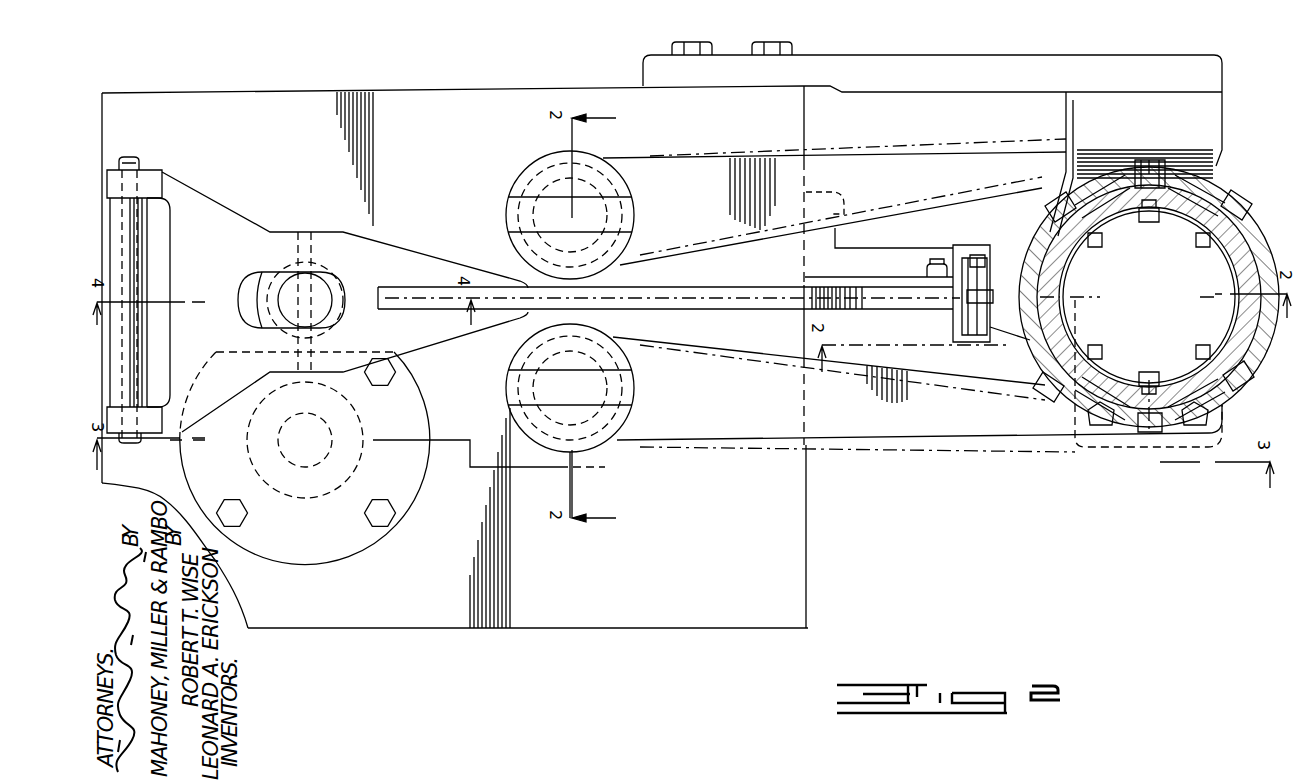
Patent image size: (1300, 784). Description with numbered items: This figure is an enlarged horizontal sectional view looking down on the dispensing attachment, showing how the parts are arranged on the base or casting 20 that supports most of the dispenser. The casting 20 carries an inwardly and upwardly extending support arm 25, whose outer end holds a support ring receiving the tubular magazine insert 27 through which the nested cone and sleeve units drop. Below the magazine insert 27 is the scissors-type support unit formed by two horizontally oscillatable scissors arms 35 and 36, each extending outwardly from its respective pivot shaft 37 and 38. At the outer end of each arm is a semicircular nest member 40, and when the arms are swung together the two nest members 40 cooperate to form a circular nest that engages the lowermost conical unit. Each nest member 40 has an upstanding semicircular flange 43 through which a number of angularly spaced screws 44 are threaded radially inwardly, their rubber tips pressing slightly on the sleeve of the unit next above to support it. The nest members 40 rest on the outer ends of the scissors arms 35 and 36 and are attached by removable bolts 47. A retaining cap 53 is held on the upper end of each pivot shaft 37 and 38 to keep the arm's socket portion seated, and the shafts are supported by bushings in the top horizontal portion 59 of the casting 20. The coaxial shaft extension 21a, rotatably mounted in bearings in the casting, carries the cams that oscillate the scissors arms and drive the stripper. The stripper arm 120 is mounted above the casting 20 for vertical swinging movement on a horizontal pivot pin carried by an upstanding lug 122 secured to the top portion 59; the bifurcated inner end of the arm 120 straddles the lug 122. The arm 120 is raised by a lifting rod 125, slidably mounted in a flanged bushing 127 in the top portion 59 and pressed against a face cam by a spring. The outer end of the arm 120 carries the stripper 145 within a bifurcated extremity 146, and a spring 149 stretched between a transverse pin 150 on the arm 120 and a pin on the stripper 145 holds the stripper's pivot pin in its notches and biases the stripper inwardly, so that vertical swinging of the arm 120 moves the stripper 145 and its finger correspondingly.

The base or casting 20 is at (811, 560).
The shaft extension 21a is at (308, 466).
The support arm 25 is at (884, 41).
The magazine insert 27 is at (1262, 244).
The scissors arm 35 is at (935, 160).
The scissors arm 36 is at (1007, 430).
The scissors arm pivot shaft 37 is at (555, 180).
The scissors arm pivot shaft 38 is at (590, 421).
The semicircular nest member 40 is at (1212, 200).
The upstanding semicircular flange 43 is at (1228, 264).
The screws 44 is at (1255, 206).
The removable bolts 47 is at (1105, 425).
The retaining cap 53 is at (524, 182).
The top horizontal portion of the casting 59 is at (455, 357).
The stripper arm 120 is at (212, 212).
The upstanding lug or support 122 is at (157, 198).
The push rod or lifting rod 125 is at (318, 290).
The flanged bushing 127 is at (252, 286).
The stripper 145 is at (1021, 336).
The bifurcated extremity 146 is at (953, 316).
The spring 149 is at (918, 276).
The transverse pin 150 is at (937, 259).